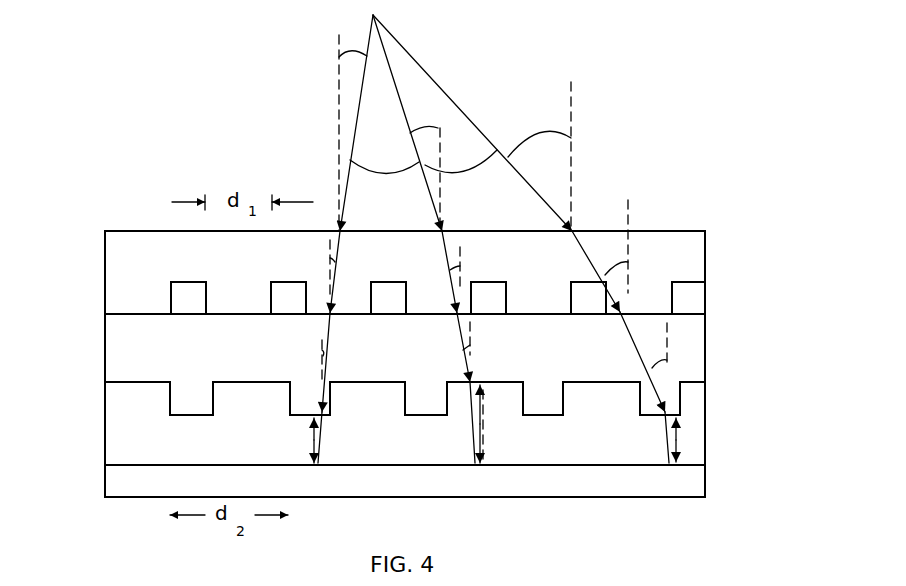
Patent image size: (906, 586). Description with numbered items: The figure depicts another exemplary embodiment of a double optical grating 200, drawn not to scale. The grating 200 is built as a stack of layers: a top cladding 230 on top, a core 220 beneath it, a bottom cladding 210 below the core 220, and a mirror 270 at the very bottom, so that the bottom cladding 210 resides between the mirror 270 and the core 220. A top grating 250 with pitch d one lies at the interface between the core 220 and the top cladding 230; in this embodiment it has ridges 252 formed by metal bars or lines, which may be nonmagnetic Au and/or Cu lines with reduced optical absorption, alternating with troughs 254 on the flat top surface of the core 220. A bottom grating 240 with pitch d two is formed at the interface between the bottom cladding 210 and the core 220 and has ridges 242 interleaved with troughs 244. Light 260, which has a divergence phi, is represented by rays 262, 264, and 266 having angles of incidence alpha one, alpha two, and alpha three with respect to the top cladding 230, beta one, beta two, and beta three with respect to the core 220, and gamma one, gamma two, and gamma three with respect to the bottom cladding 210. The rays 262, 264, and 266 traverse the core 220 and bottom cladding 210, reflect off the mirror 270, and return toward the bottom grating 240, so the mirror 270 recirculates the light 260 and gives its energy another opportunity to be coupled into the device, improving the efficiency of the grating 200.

The double optical grating 200 is at (158, 42).
The light 260 is at (268, 148).
The ray 262 is at (393, 80).
The ray 264 is at (468, 118).
The ray 266 is at (355, 133).
The top cladding 230 is at (638, 231).
The ridges 252 is at (158, 299).
The troughs 254 is at (656, 309).
The top grating 250 is at (97, 299).
The bottom grating 240 is at (97, 382).
The mirror 270 is at (105, 480).
The core 220 is at (706, 376).
The bottom cladding 210 is at (706, 450).
The troughs 244 is at (423, 425).
The ridges 242 is at (605, 398).